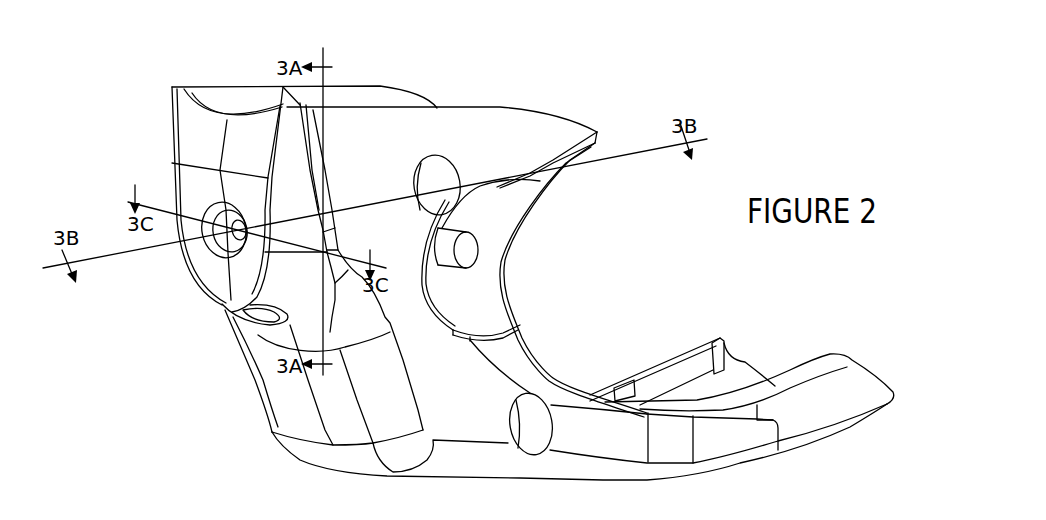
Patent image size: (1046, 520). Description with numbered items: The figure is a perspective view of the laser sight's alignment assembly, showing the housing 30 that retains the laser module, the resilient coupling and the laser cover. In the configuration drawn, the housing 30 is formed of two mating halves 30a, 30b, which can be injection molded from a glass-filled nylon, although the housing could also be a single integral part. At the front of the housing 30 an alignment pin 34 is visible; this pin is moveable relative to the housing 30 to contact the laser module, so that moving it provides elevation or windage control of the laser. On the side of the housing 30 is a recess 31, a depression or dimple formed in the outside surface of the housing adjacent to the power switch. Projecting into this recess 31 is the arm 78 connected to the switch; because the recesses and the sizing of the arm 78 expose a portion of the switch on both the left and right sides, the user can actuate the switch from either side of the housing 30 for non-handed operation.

The housing 30 is at (163, 93).
The housing half 30a is at (224, 99).
The housing half 30b is at (567, 128).
The recess 31 is at (488, 292).
The alignment pin 34 is at (256, 336).
The arm 78 is at (468, 250).